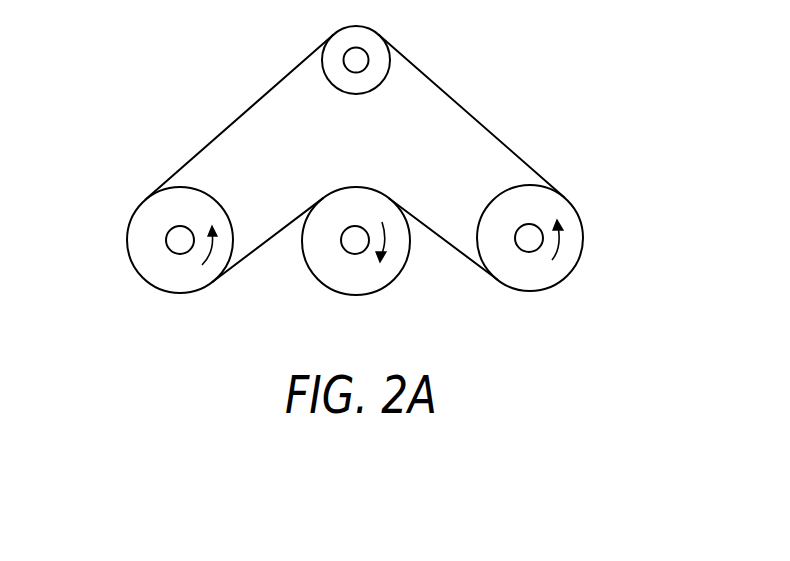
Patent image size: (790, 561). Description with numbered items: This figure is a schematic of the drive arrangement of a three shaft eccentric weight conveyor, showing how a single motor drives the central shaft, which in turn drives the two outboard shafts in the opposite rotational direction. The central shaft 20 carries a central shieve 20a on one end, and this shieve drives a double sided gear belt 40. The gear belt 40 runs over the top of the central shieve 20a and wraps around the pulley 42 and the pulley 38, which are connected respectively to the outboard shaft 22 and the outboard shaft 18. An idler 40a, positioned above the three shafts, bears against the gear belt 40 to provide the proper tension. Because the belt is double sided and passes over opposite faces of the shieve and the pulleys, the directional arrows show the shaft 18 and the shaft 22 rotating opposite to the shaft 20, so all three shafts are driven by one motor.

The double sided gear belt 40 is at (505, 143).
The idler 40a is at (378, 88).
The pulley 42 is at (128, 223).
The shaft 22 is at (180, 254).
The shaft 20 is at (352, 254).
The central shieve 20a is at (388, 283).
The pulley 38 is at (585, 235).
The shaft 18 is at (529, 252).